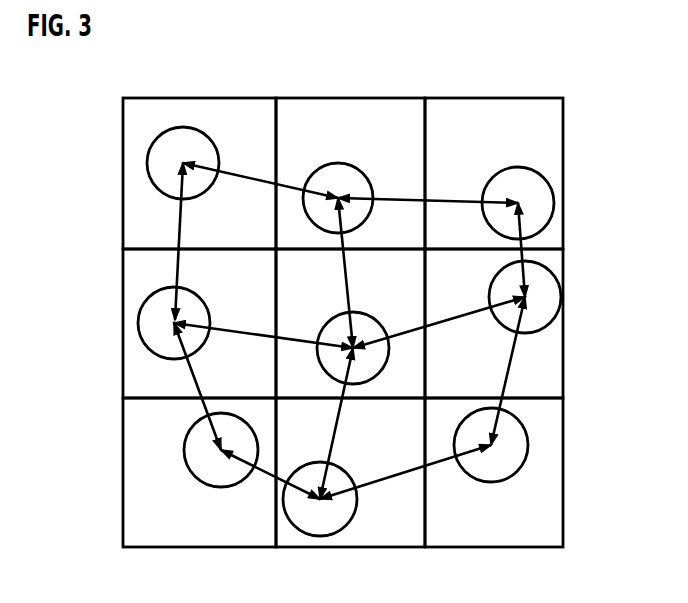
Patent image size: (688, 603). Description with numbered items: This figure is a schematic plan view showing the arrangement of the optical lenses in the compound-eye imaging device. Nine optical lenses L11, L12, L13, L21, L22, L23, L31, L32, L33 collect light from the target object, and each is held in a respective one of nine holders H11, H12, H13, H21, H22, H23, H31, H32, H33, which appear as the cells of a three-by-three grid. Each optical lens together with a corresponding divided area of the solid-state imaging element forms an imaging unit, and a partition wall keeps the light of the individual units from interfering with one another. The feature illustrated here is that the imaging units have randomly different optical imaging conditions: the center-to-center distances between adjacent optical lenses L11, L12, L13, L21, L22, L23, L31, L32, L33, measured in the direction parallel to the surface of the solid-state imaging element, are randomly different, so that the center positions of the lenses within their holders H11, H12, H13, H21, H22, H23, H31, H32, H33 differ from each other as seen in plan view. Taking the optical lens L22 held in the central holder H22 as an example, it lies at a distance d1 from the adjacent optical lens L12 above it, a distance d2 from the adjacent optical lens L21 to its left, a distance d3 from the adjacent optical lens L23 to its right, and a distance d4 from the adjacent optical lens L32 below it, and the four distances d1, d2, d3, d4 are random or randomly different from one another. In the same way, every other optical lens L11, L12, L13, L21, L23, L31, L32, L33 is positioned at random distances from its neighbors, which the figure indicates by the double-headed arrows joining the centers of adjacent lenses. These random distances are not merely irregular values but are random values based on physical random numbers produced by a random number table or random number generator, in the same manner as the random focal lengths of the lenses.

The optical lens L11 is at (178, 128).
The optical lens L12 is at (337, 168).
The optical lens L13 is at (505, 178).
The optical lens L21 is at (150, 340).
The optical lens L22 is at (365, 330).
The optical lens L23 is at (545, 297).
The optical lens L31 is at (220, 477).
The optical lens L32 is at (322, 524).
The optical lens L33 is at (507, 462).
The holder H11 is at (243, 118).
The holder H12 is at (395, 118).
The holder H13 is at (548, 118).
The holder H21 is at (130, 270).
The holder H22 is at (407, 370).
The holder H23 is at (540, 385).
The holder H31 is at (160, 530).
The holder H32 is at (382, 525).
The holder H33 is at (463, 528).
The distance d1 is at (346, 283).
The distance d2 is at (243, 332).
The distance d3 is at (448, 320).
The distance d4 is at (338, 432).